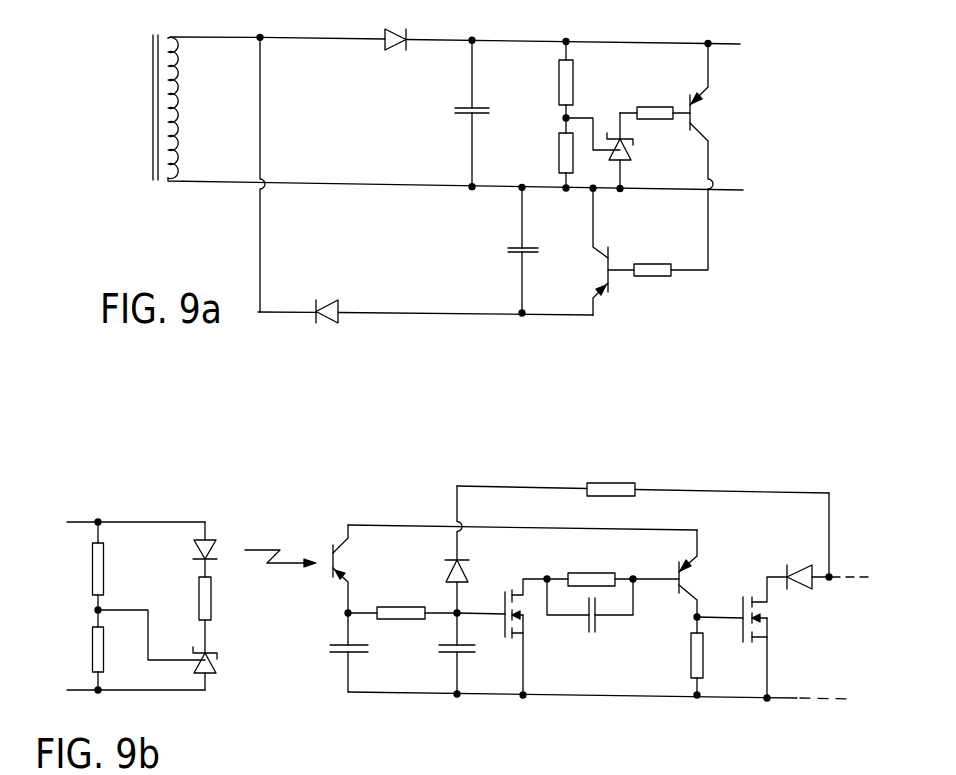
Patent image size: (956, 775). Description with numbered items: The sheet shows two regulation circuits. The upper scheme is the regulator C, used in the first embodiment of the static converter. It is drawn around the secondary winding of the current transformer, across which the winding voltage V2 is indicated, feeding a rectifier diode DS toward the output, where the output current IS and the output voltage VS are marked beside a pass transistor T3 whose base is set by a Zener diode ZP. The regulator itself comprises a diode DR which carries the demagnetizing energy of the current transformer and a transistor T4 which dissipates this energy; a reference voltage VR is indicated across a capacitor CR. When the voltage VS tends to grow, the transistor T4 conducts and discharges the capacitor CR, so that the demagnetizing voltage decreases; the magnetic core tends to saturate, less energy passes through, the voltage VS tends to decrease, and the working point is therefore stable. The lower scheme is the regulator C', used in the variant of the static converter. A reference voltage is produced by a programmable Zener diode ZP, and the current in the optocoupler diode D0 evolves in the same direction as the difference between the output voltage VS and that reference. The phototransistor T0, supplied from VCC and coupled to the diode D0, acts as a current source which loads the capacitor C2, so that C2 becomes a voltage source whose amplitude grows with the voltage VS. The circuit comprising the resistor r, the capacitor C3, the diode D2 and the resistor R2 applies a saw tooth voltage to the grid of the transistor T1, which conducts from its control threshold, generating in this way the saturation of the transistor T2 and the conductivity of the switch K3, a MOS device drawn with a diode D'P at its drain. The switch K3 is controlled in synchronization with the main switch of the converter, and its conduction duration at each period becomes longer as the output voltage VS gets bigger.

In FIG. 9a, the rectifier diode DS is at (399, 55).
In FIG. 9a, the secondary winding voltage V2 is at (216, 45).
In FIG. 9a, the output current IS is at (747, 44).
In FIG. 9a, the output voltage VS is at (762, 47).
In FIG. 9b, the output voltage VS is at (67, 530).
In FIG. 9a, the pass transistor T3 is at (699, 156).
In FIG. 9a, the programmable Zener diode ZP is at (635, 152).
In FIG. 9b, the programmable Zener diode ZP is at (221, 668).
In FIG. 9a, the reference voltage VR is at (437, 197).
In FIG. 9a, the capacitor CR is at (508, 250).
In FIG. 9a, the diode DR is at (425, 298).
In FIG. 9a, the transistor T4 is at (620, 250).
In FIG. 9b, the optocoupler diode D0 is at (216, 546).
In FIG. 9b, the supply voltage terminal VCC is at (522, 514).
In FIG. 9b, the phototransistor T0 is at (355, 569).
In FIG. 9b, the resistor r is at (402, 599).
In FIG. 9b, the diode D2 is at (470, 576).
In FIG. 9b, the capacitor C2 is at (355, 652).
In FIG. 9b, the capacitor C3 is at (463, 655).
In FIG. 9b, the transistor T1 is at (529, 638).
In FIG. 9b, the transistor T2 is at (703, 614).
In FIG. 9b, the resistor R2 is at (643, 478).
In FIG. 9b, the protection diode D'P is at (827, 541).
In FIG. 9b, the switch K3 is at (771, 639).